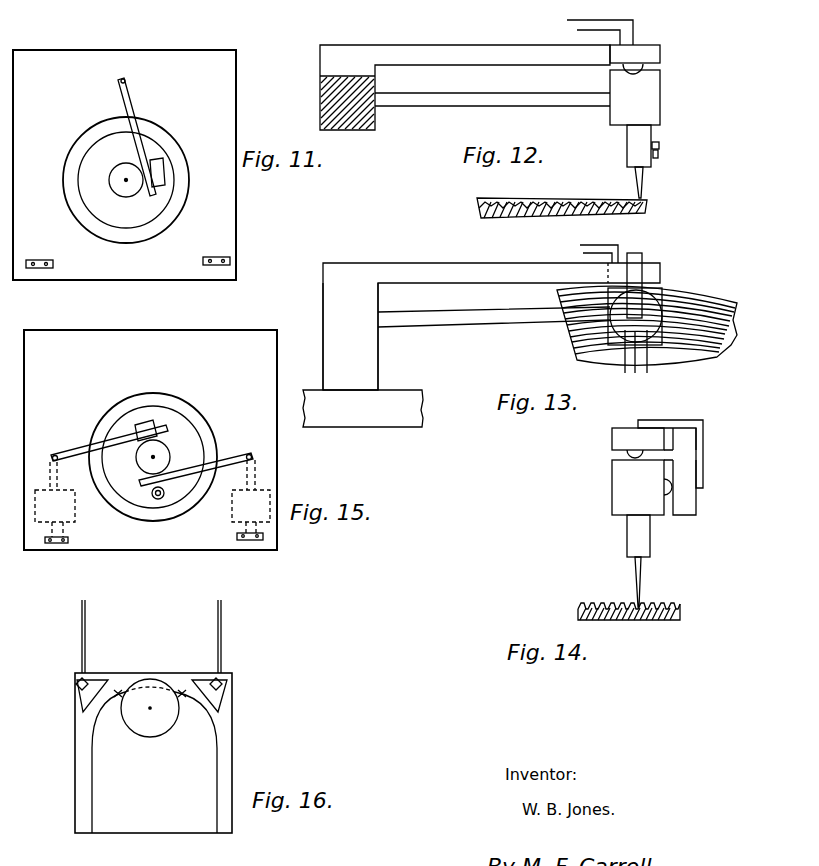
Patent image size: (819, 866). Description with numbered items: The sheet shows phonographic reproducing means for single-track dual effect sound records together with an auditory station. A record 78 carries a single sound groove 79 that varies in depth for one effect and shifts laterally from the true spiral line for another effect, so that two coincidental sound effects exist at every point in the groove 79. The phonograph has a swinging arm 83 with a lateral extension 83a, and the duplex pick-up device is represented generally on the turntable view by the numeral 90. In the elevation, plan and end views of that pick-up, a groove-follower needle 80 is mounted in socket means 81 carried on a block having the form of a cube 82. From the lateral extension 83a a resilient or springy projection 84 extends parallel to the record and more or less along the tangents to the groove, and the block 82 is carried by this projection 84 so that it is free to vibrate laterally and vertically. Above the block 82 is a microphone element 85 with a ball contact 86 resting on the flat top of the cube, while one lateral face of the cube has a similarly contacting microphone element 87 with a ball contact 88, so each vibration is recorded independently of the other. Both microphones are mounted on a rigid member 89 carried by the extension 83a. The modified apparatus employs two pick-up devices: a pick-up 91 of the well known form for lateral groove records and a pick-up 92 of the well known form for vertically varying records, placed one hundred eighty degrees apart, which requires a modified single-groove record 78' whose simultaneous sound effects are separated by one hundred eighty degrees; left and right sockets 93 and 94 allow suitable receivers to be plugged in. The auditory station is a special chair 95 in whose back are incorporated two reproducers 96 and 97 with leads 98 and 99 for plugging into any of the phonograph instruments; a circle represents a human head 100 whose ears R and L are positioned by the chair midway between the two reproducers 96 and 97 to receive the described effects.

In FIG. 11, the record 78 is at (126, 194).
In FIG. 12, the record 78 is at (589, 208).
In FIG. 13, the record 78 is at (673, 323).
In FIG. 14, the record 78 is at (644, 627).
In FIG. 15, the modified record 78' is at (167, 457).
In FIG. 12, the sound groove 79 is at (614, 199).
In FIG. 13, the sound groove 79 is at (730, 345).
In FIG. 14, the sound groove 79 is at (612, 601).
In FIG. 12, the needle 80 is at (643, 178).
In FIG. 14, the needle 80 is at (642, 575).
In FIG. 12, the socket means 81 is at (641, 135).
In FIG. 14, the socket means 81 is at (640, 542).
In FIG. 12, the block 82 is at (651, 90).
In FIG. 13, the block 82 is at (655, 295).
In FIG. 14, the block 82 is at (625, 497).
In FIG. 11, the swinging arm 83 is at (137, 128).
In FIG. 13, the swinging arm 83 is at (414, 412).
In FIG. 12, the lateral extension 83a is at (372, 116).
In FIG. 13, the lateral extension 83a is at (372, 336).
In FIG. 12, the resilient projection 84 is at (497, 98).
In FIG. 13, the resilient projection 84 is at (508, 318).
In FIG. 12, the microphone element 85 is at (650, 50).
In FIG. 13, the microphone element 85 is at (648, 355).
In FIG. 14, the microphone element 85 is at (612, 445).
In FIG. 12, the ball contact 86 is at (650, 66).
In FIG. 14, the ball contact 86 is at (628, 454).
In FIG. 13, the microphone element 87 is at (655, 263).
In FIG. 14, the microphone element 87 is at (698, 502).
In FIG. 14, the ball contact 88 is at (672, 487).
In FIG. 12, the rigid member 89 is at (465, 55).
In FIG. 13, the rigid member 89 is at (493, 265).
In FIG. 14, the rigid member 89 is at (690, 438).
In FIG. 11, the pick-up device 90 is at (158, 174).
In FIG. 15, the pick-up device 91 is at (150, 425).
In FIG. 15, the pick-up device 92 is at (162, 499).
In FIG. 15, the left socket 93 is at (70, 540).
In FIG. 15, the right socket 94 is at (237, 537).
In FIG. 16, the chair 95 is at (175, 820).
In FIG. 16, the reproducer 96 is at (88, 685).
In FIG. 16, the reproducer 97 is at (218, 690).
In FIG. 16, the lead 98 is at (87, 610).
In FIG. 16, the lead 99 is at (222, 623).
In FIG. 16, the human head 100 is at (153, 733).